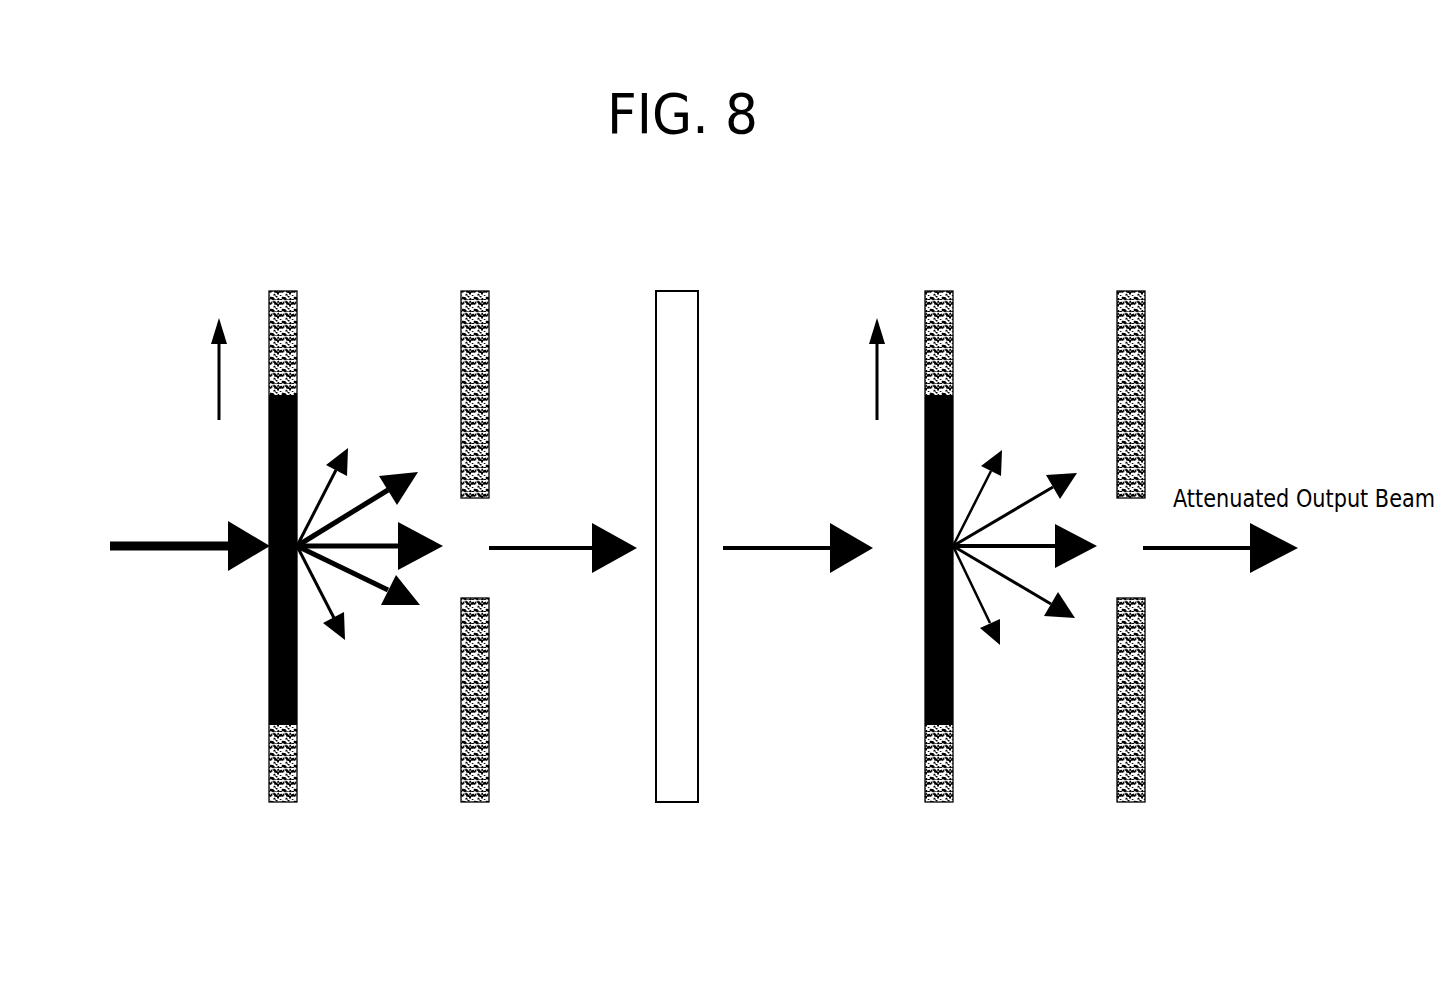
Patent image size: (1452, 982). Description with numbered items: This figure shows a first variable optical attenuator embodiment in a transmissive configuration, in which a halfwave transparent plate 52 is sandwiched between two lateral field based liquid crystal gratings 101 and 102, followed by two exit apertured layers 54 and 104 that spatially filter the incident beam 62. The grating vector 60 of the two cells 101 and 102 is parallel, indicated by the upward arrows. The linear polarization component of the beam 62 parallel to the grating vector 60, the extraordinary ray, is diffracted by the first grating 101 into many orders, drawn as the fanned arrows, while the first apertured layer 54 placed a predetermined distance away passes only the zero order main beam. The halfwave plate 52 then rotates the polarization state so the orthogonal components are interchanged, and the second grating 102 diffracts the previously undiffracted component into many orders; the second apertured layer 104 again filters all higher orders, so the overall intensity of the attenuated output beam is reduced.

The halfwave transparent plate 52 is at (676, 803).
The exit apertured layer 54 is at (473, 803).
The grating vector 60 is at (219, 380).
The incident beam 62 is at (155, 552).
The first lateral field based liquid crystal grating 101 is at (280, 803).
The second lateral field based liquid crystal grating 102 is at (937, 803).
The second exit apertured layer 104 is at (1130, 805).